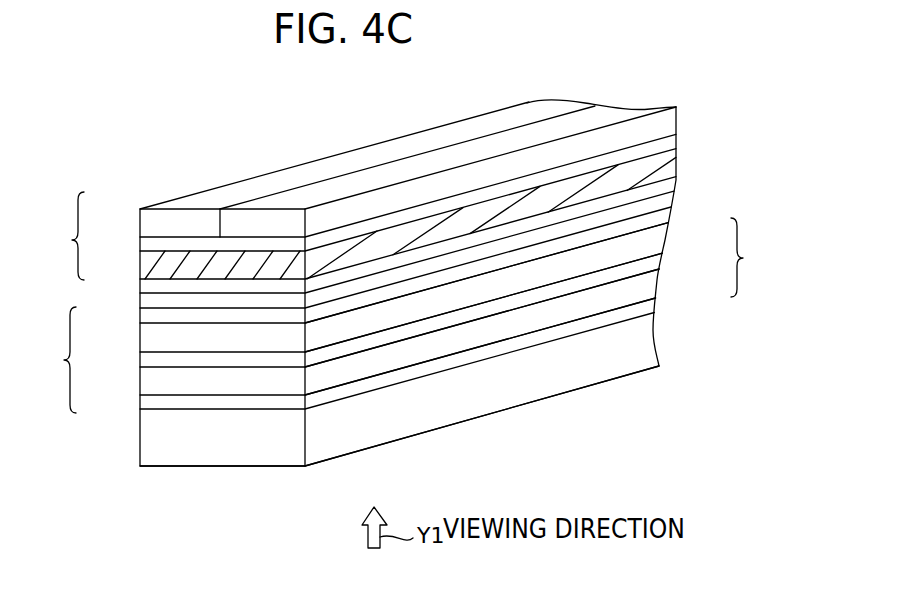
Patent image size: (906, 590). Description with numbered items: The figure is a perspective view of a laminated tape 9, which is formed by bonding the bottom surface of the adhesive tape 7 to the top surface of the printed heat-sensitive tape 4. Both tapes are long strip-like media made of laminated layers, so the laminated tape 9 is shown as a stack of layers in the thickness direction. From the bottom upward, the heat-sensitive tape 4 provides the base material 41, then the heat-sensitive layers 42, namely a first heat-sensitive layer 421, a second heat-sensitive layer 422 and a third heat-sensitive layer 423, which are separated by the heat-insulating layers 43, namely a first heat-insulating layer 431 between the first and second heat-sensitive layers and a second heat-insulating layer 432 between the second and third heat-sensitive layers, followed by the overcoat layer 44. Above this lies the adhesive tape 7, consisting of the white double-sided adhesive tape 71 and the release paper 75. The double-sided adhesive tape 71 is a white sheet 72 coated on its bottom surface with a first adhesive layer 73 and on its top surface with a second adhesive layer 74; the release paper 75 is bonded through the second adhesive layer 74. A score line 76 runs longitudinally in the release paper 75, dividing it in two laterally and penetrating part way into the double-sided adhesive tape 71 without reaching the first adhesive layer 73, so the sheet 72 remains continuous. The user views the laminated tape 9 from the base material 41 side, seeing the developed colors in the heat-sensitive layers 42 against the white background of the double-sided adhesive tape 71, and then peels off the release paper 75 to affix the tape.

The heat-sensitive tape 4 is at (255, 483).
The adhesive tape 7 is at (253, 153).
The laminated tape 9 is at (582, 422).
The base material 41 is at (148, 441).
The heat-sensitive layers 42 is at (356, 303).
The first heat-sensitive layer 421 is at (148, 407).
The second heat-sensitive layer 422 is at (148, 367).
The third heat-sensitive layer 423 is at (148, 323).
The heat-insulating layers 43 is at (542, 306).
The first heat-insulating layer 431 is at (650, 278).
The second heat-insulating layer 432 is at (653, 237).
The overcoat layer 44 is at (658, 204).
The double-sided adhesive tape 71 is at (361, 210).
The sheet 72 is at (148, 262).
The first adhesive layer 73 is at (148, 287).
The second adhesive layer 74 is at (147, 241).
The release paper 75 is at (668, 122).
The score line 76 is at (468, 139).